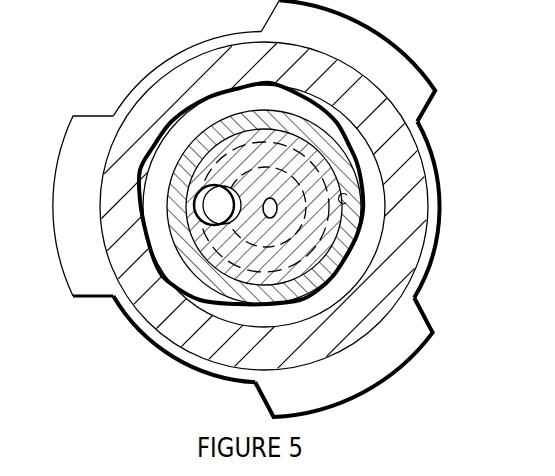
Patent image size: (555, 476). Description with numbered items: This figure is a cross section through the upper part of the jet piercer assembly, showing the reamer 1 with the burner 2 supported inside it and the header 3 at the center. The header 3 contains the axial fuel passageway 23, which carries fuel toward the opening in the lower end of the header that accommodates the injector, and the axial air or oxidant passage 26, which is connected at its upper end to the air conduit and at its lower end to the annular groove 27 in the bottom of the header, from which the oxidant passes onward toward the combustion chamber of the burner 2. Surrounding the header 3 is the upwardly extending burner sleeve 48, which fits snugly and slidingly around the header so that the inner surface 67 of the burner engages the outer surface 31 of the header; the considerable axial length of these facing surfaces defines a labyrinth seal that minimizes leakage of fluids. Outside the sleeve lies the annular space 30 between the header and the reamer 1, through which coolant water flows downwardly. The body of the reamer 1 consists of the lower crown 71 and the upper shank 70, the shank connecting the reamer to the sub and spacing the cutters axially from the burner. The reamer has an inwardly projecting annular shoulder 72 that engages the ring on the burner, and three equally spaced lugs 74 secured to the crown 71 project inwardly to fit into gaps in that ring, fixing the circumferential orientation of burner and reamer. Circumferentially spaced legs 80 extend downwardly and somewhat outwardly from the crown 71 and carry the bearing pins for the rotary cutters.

The reamer 1 is at (431, 293).
The burner 2 is at (238, 313).
The header 3 is at (218, 293).
The axial fuel passageway 23 is at (281, 198).
The axial air or oxidant passage 26 is at (238, 219).
The annular groove 27 is at (336, 110).
The annular space 30 is at (337, 289).
The outer surface 31 is at (168, 252).
The burner sleeve 48 is at (278, 122).
The inner surface 67 is at (348, 198).
The shank 70 is at (190, 78).
The reamer crown 71 is at (202, 40).
The annular shoulder 72 is at (374, 264).
The lugs 74 is at (9, 326).
The legs 80 is at (378, 31).